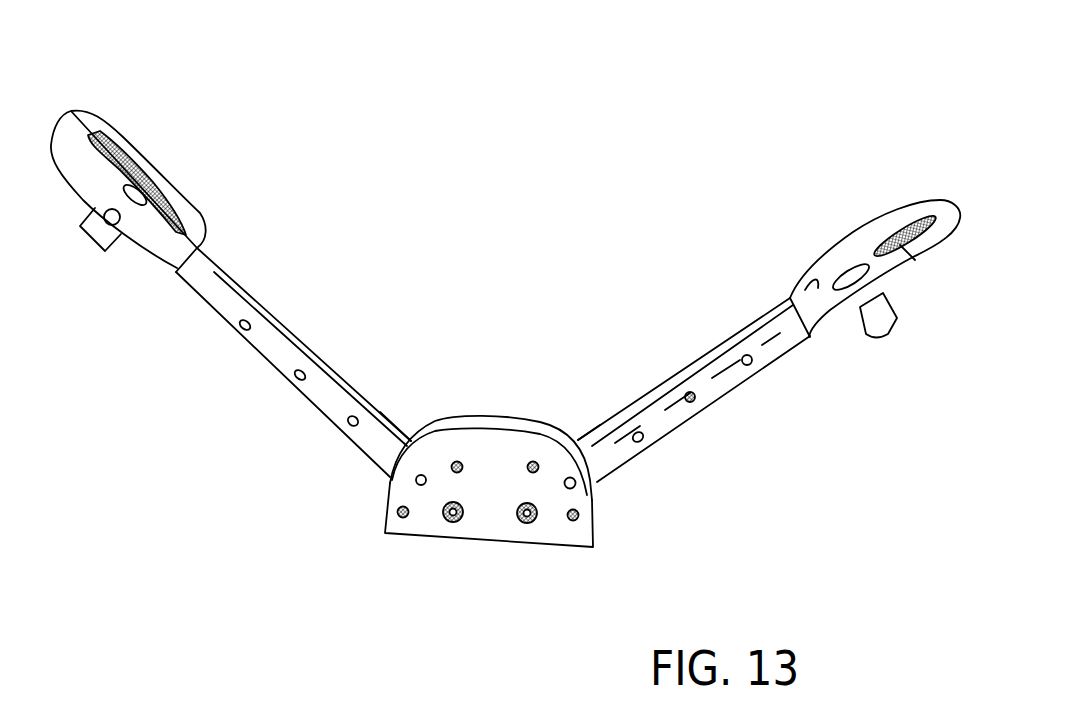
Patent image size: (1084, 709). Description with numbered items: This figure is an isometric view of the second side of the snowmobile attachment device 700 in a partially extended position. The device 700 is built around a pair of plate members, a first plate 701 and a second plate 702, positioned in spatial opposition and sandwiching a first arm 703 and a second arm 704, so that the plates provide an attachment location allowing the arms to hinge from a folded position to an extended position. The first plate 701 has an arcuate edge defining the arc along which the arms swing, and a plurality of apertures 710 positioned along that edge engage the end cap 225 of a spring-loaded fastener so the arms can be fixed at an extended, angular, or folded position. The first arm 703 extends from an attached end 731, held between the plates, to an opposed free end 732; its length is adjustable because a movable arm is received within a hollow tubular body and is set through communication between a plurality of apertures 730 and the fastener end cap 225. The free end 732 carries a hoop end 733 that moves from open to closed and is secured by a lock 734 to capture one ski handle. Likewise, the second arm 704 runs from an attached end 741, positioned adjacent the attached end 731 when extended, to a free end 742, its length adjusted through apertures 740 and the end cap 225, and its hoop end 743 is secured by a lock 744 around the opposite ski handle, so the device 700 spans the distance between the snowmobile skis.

The snowmobile attachment device 700 is at (467, 220).
The first plate 701 is at (482, 522).
The second plate 702 is at (480, 420).
The first arm 703 is at (693, 360).
The second arm 704 is at (288, 337).
The apertures 710 is at (577, 513).
The end cap 225 is at (421, 480).
The apertures 730 is at (695, 400).
The attached end 731 is at (580, 443).
The free end 732 is at (777, 327).
The hoop end 733 is at (923, 220).
The lock 734 is at (883, 320).
The apertures 740 is at (239, 330).
The attached end 741 is at (388, 457).
The free end 742 is at (203, 247).
The hoop end 743 is at (85, 120).
The lock 744 is at (83, 243).